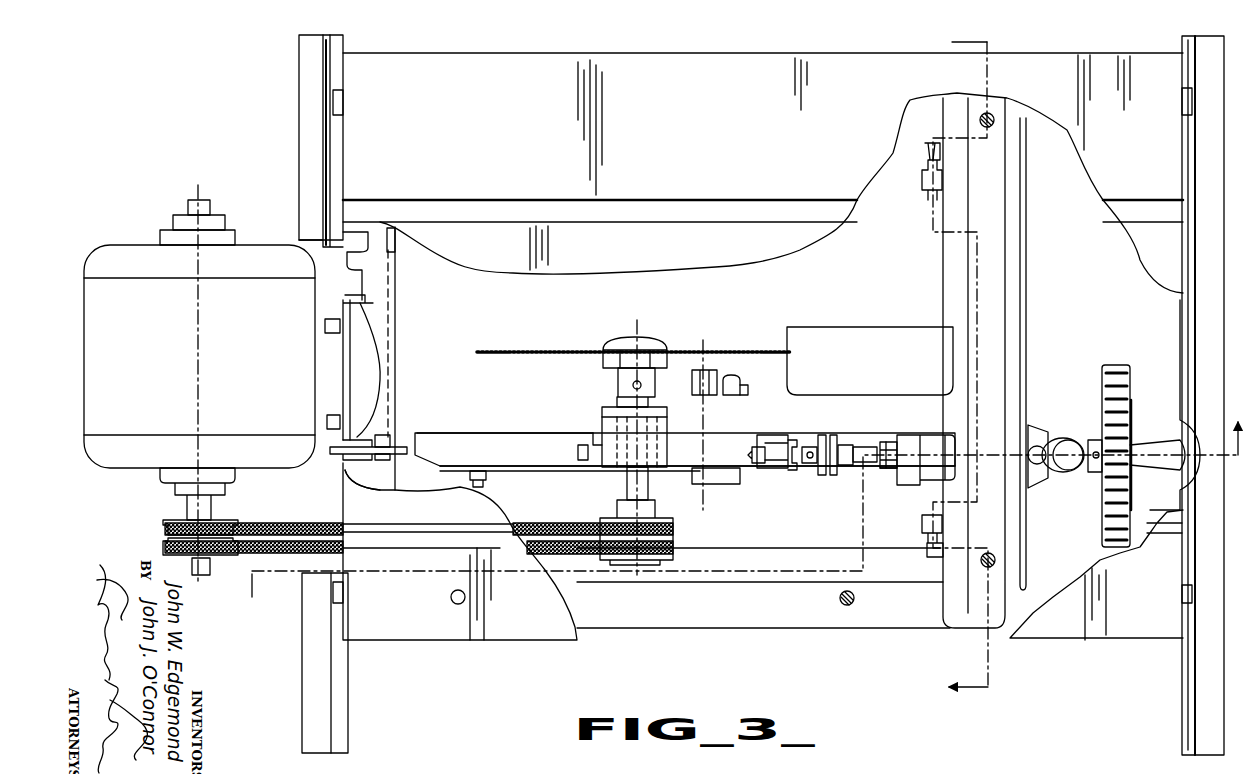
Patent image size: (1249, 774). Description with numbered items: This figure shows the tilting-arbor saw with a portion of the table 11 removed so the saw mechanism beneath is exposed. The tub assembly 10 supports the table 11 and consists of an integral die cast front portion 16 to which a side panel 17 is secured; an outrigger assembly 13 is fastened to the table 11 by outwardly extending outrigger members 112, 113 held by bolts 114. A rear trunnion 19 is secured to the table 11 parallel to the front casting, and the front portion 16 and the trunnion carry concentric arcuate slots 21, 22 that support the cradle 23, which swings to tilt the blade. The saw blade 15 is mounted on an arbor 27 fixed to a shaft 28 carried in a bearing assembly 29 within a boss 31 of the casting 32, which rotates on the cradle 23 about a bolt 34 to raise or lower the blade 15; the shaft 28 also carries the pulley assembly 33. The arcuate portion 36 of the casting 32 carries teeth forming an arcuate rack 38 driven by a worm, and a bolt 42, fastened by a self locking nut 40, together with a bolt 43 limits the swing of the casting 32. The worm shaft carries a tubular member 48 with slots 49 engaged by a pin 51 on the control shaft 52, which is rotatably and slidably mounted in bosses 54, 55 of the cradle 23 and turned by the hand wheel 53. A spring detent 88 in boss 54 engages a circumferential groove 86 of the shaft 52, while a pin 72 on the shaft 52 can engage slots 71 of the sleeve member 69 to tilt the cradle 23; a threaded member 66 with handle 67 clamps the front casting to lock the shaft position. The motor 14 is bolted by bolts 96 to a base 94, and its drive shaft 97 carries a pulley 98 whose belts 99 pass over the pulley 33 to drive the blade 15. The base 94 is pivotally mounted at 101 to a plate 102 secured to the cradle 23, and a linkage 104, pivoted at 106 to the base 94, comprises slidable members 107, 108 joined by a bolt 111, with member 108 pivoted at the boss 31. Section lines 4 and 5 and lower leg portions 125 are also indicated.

The tub assembly 10 is at (858, 630).
The table 11 is at (748, 66).
The outrigger assembly 13 is at (298, 67).
The motor 14 is at (127, 247).
The saw blade 15 is at (572, 350).
The front portion 16 is at (1025, 260).
The side panel 17 is at (742, 630).
The rear trunnion 19 is at (398, 292).
The arcuate slot 21 is at (985, 342).
The arcuate slot 22 is at (396, 245).
The cradle 23 is at (880, 330).
The arbor 27 is at (655, 338).
The shaft 28 is at (627, 487).
The bearing assembly 29 is at (606, 420).
The boss 31 is at (668, 422).
The casting 32 is at (715, 440).
The pulley assembly 33 is at (670, 517).
The bolt 34 is at (703, 368).
The arcuate portion 36 is at (595, 432).
The arcuate rack 38 is at (577, 451).
The self locking nut 40 is at (735, 375).
The bolt 42 is at (748, 392).
The bolt 43 is at (760, 467).
The tubular member 48 is at (770, 440).
The slots 49 is at (790, 440).
The pin 51 is at (808, 464).
The shaft 52 is at (865, 447).
The control hand wheel 53 is at (1115, 365).
The boss 54 is at (821, 436).
The boss 55 is at (912, 486).
The threaded member 66 is at (1038, 428).
The handle 67 is at (1066, 440).
The sleeve member 69 is at (885, 470).
The slots 71 is at (887, 442).
The pin 72 is at (900, 452).
The circumferential groove 86 is at (845, 445).
The spring detent 88 is at (832, 476).
The base 94 is at (342, 330).
The bolts 96 is at (323, 323).
The drive shaft 97 is at (204, 575).
The pulley 98 is at (172, 518).
The belts 99 is at (293, 525).
The pivot 101 is at (343, 452).
The plate 102 is at (350, 365).
The linkage 104 is at (443, 458).
The pivot 106 is at (392, 440).
The member 107 is at (445, 490).
The member 108 is at (528, 468).
The bolt 111 is at (481, 478).
The outrigger member 112 is at (1205, 668).
The outrigger member 113 is at (302, 153).
The bolts 114 is at (341, 97).
The legs 125 is at (347, 700).
The section line 4 is at (970, 365).
The section line 5 is at (746, 523).